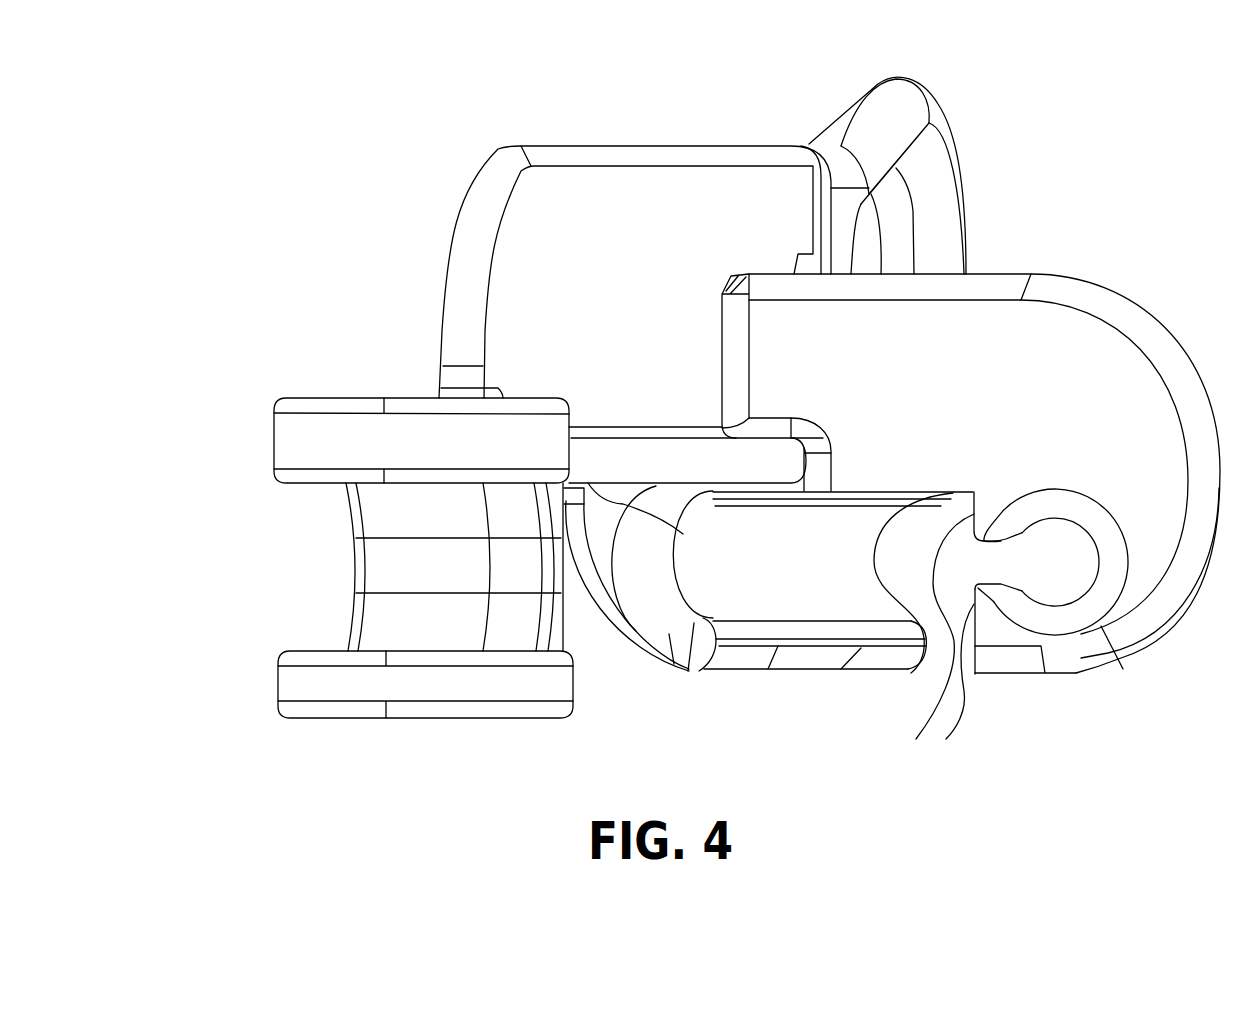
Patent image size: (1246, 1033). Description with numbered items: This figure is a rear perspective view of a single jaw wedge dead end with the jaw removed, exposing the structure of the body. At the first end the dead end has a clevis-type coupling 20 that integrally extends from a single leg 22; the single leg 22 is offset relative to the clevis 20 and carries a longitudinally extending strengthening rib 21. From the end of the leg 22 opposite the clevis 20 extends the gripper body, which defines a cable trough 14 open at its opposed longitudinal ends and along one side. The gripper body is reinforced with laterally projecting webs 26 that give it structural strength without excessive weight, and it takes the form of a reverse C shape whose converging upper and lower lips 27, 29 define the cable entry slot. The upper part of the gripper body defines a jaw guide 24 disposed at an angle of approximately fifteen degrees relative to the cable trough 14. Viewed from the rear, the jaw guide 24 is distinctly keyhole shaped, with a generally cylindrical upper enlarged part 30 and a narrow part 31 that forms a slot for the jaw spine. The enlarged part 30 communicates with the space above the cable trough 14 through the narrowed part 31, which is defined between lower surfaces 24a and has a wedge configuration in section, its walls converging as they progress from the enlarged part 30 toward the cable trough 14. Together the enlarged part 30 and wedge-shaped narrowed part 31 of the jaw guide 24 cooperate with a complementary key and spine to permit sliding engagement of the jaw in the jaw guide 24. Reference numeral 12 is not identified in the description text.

The hood 12 is at (848, 120).
The cable trough 14 is at (750, 588).
The clevis-type coupling 20 is at (273, 447).
The strengthening rib 21 is at (533, 260).
The single leg 22 is at (662, 463).
The jaw guide 24 is at (1078, 583).
The lower surfaces 24a is at (963, 690).
The laterally projecting webs 26 is at (1085, 352).
The upper lip 27 is at (1007, 662).
The lower lip 29 is at (636, 607).
The enlarged part 30 is at (1072, 573).
The narrowed part 31 is at (990, 567).